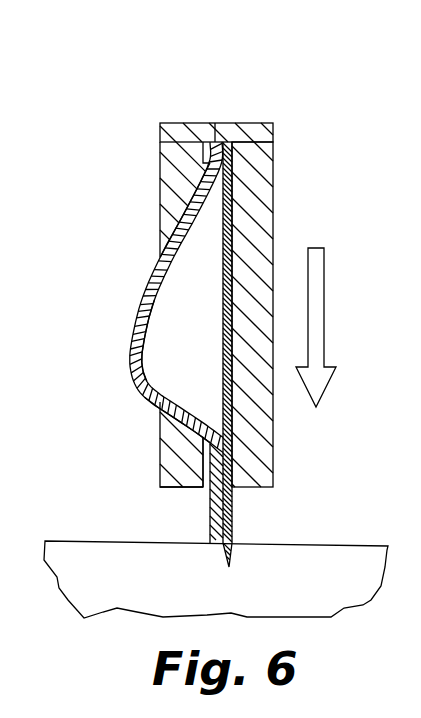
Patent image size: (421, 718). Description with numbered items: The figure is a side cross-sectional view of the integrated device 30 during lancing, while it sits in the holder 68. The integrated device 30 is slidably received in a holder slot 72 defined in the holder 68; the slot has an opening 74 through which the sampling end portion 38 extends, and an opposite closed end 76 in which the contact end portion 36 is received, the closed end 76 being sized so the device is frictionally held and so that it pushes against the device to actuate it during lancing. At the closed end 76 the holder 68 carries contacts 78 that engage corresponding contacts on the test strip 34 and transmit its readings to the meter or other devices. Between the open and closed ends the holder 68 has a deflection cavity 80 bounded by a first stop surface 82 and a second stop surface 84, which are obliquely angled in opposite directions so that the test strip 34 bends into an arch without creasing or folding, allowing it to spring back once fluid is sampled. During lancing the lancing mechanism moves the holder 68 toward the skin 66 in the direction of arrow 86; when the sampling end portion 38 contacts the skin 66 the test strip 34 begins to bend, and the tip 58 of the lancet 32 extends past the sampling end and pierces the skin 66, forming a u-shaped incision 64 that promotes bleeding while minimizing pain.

The integrated device 30 is at (117, 342).
The lancet 32 is at (236, 207).
The test strip 34 is at (142, 283).
The contact end portion 36 is at (132, 173).
The sampling end portion 38 is at (185, 527).
The tip 58 is at (232, 561).
The incision 64 is at (231, 540).
The skin 66 is at (327, 545).
The holder 68 is at (258, 243).
The holder slot 72 is at (199, 469).
The opening 74 is at (201, 487).
The closed end 76 is at (213, 123).
The contacts 78 is at (201, 150).
The deflection cavity 80 is at (185, 322).
The first stop surface 82 is at (167, 411).
The second stop surface 84 is at (163, 228).
The arrow 86 is at (325, 309).